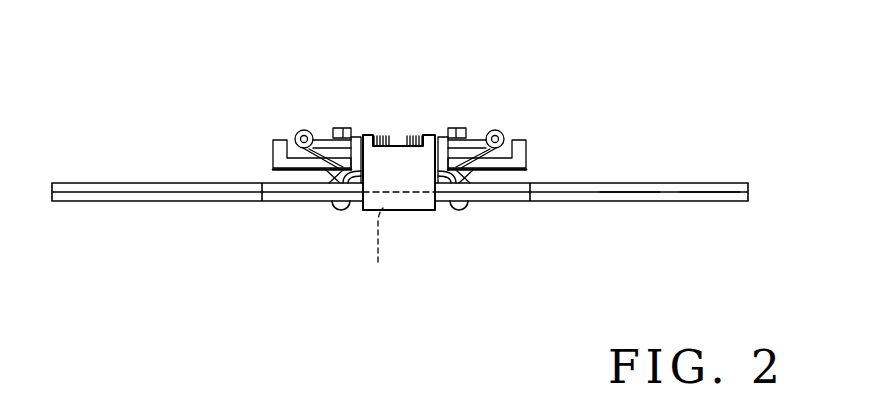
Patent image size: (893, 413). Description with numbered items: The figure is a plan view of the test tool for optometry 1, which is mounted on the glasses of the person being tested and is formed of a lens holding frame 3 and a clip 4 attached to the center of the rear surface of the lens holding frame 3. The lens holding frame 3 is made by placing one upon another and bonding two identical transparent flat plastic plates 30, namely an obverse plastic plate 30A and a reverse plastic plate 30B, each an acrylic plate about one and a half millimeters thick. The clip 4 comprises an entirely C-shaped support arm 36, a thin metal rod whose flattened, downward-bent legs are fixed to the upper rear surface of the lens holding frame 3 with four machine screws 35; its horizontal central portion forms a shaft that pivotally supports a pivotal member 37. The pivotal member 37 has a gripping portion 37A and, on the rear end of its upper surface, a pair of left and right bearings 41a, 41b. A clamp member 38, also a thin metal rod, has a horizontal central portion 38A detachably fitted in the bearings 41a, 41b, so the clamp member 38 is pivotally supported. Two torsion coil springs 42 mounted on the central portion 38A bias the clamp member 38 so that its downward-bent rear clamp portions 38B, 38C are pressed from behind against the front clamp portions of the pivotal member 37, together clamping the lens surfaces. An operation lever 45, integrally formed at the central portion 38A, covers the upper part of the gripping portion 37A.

The test tool for optometry 1 is at (628, 30).
The lens holding frame 3 is at (658, 177).
The clip 4 is at (272, 123).
The transparent flat plastic plate 30 is at (732, 283).
The obverse plastic plate 30A is at (642, 200).
The reverse plastic plate 30B is at (710, 185).
The machine screw 35 is at (340, 214).
The support arm 36 is at (327, 170).
The pivotal member 37 is at (500, 178).
The gripping portion 37A is at (373, 250).
The clamp member 38 is at (327, 133).
The central portion of the clamp member 38A is at (476, 138).
The rear clamp portion 38B is at (499, 130).
The rear clamp portion 38C is at (300, 129).
The bearing 41a is at (439, 134).
The bearing 41b is at (355, 136).
The torsion coil spring 42 is at (419, 134).
The operation lever 45 is at (418, 205).